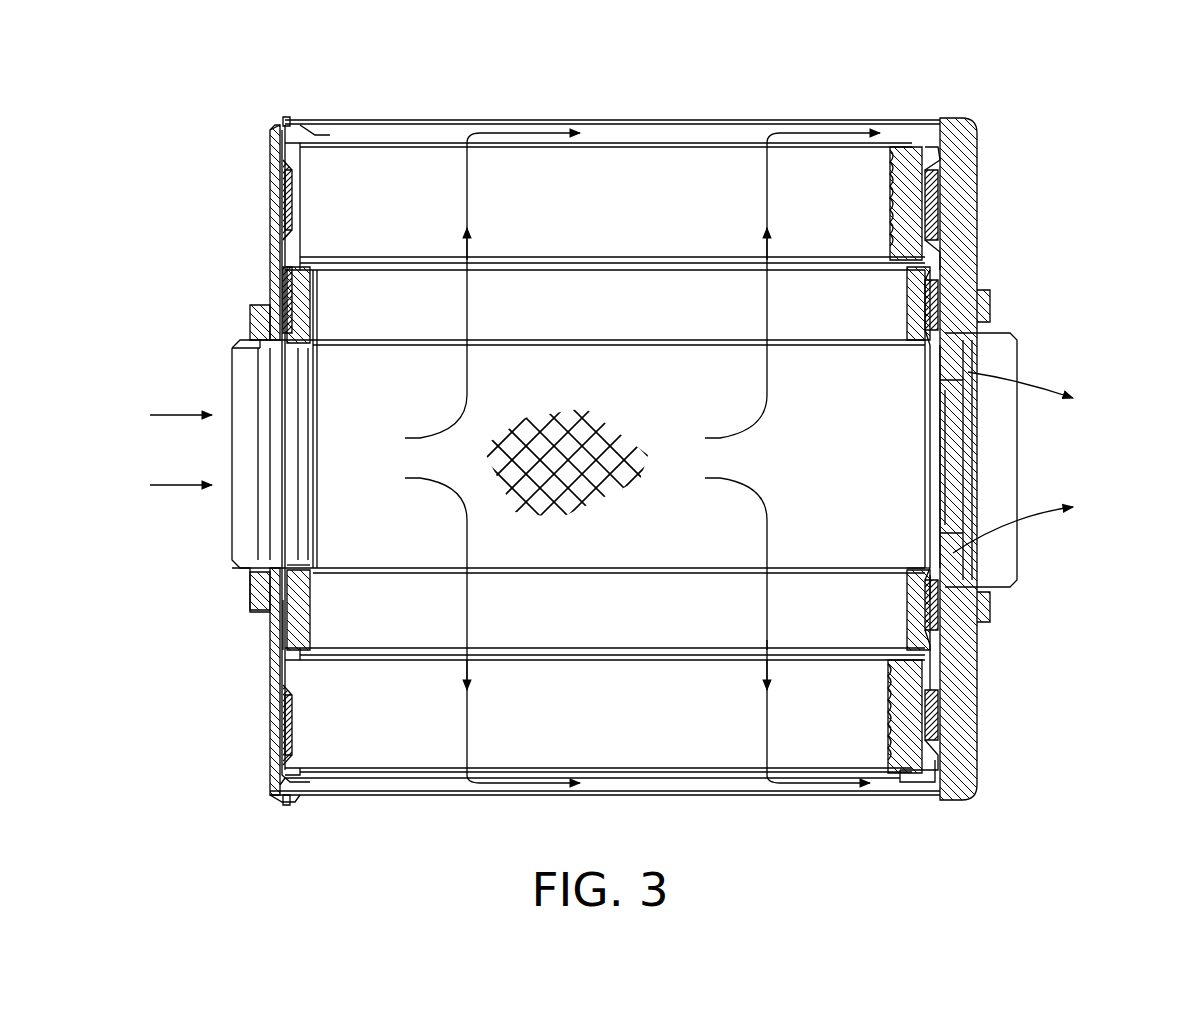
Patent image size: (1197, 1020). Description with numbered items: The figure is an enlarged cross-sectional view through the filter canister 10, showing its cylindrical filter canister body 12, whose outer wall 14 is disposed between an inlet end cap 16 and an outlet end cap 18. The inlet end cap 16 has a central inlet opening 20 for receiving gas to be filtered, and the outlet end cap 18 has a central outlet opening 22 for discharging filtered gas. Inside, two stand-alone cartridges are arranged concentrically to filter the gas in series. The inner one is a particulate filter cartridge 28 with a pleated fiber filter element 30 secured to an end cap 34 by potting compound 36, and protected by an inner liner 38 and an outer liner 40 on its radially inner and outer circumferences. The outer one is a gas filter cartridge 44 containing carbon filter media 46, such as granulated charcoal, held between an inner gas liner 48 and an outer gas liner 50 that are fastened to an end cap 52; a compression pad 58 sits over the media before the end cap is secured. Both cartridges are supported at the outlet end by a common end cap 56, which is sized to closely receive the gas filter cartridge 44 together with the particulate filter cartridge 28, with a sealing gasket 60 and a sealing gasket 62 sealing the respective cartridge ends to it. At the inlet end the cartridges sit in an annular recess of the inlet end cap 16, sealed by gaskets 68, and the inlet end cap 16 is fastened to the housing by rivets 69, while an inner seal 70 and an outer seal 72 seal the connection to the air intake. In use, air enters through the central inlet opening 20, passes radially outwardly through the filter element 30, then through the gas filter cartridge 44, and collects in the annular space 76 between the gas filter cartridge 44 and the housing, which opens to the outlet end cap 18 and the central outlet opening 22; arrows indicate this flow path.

The filter canister 10 is at (455, 70).
The filter canister body 12 is at (778, 800).
The outer wall 14 is at (440, 796).
The inlet end cap 16 is at (270, 778).
The outlet end cap 18 is at (977, 236).
The central inlet opening 20 is at (218, 512).
The central outlet opening 22 is at (1035, 478).
The particulate filter cartridge 28 is at (283, 640).
The pleated fiber filter element 30 is at (580, 625).
The end cap 34 is at (290, 562).
The potting compound 36 is at (285, 630).
The inner liner 38 is at (815, 572).
The outer liner 40 is at (935, 688).
The gas filter cartridge 44 is at (363, 780).
The carbon filter media 46 is at (580, 721).
The inner gas liner 48 is at (858, 652).
The outer gas liner 50 is at (790, 765).
The end cap 52 is at (282, 742).
The common end cap 56 is at (943, 366).
The compression pad 58 is at (912, 162).
The sealing gasket 60 is at (935, 300).
The sealing gasket 62 is at (935, 198).
The gaskets 68 is at (285, 300).
The rivets 69 is at (285, 112).
The inner seal 70 is at (262, 352).
The outer seal 72 is at (260, 574).
The annular space 76 is at (670, 135).